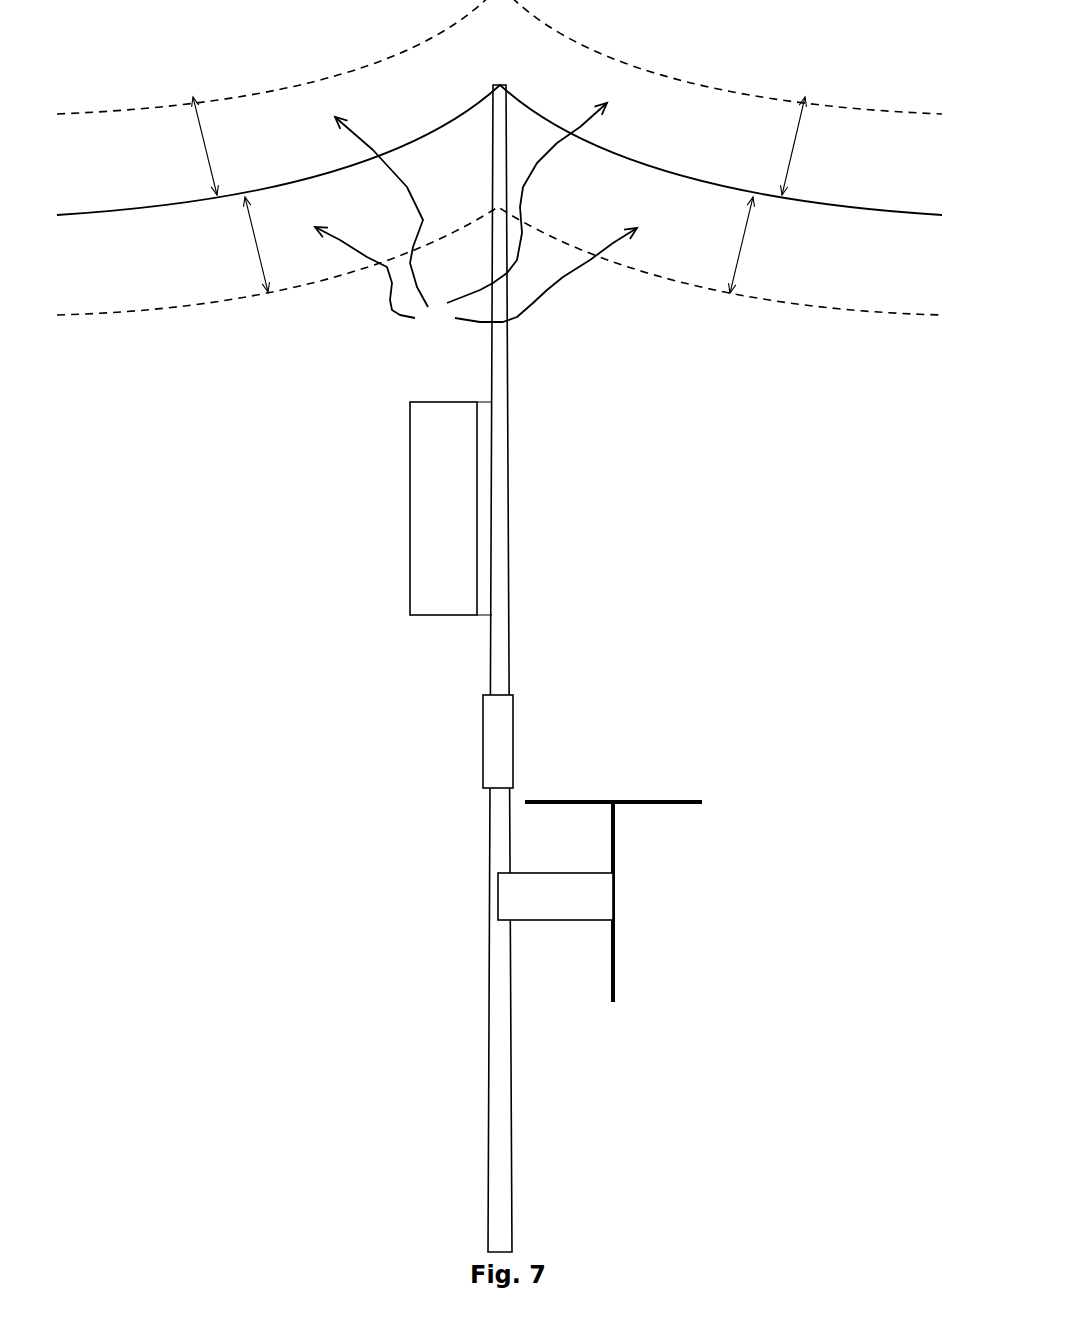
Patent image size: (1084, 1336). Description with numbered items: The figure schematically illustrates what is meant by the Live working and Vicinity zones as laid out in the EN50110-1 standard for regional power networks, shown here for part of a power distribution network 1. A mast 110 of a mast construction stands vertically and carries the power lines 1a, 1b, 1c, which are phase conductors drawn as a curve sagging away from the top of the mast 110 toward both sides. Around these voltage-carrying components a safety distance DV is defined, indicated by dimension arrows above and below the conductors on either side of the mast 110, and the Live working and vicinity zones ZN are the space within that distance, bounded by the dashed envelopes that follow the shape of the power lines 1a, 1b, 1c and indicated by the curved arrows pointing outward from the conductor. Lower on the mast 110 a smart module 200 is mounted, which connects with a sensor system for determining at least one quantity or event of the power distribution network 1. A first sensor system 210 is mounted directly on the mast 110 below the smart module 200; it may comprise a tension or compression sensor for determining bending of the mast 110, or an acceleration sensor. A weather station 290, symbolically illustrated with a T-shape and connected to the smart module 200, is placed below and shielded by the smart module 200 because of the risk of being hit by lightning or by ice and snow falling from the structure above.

The power distribution network 1 is at (185, 69).
The power line 1a is at (499, 150).
The power line 1b is at (499, 150).
The power line 1c is at (660, 174).
The safety distance DV is at (499, 195).
The Live working and vicinity zones ZN is at (476, 217).
The mast 110 is at (500, 607).
The smart module 200 is at (432, 513).
The first sensor system 210 is at (498, 740).
The weather station 290 is at (658, 800).